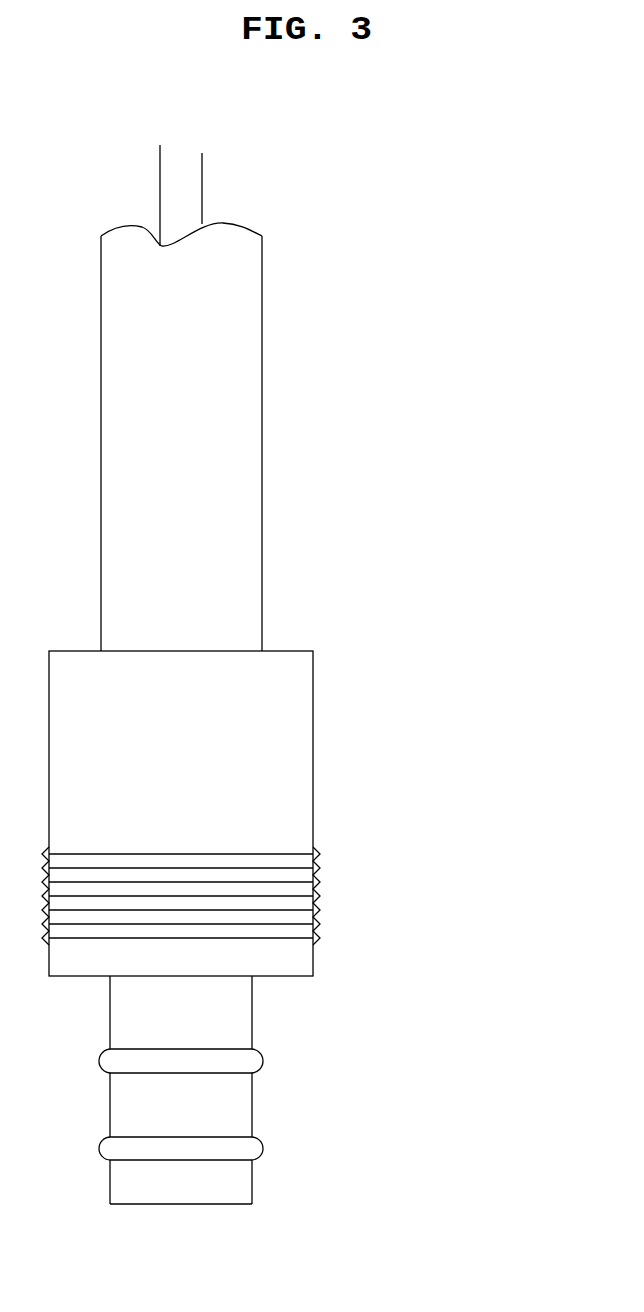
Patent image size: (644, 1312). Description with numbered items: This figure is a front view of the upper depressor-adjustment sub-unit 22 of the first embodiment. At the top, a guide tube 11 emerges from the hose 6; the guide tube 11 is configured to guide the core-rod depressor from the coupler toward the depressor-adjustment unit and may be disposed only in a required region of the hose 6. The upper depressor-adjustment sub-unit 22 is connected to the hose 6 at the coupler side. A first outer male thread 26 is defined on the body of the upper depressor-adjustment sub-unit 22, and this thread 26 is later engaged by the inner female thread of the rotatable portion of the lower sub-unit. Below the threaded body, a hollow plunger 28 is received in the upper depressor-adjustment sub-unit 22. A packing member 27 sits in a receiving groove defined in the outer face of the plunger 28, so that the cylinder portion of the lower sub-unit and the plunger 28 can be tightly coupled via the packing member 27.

The guide tube 11 is at (220, 182).
The hose 6 is at (296, 388).
The upper depressor-adjustment sub-unit 22 is at (375, 731).
The first outer male thread 26 is at (342, 897).
The packing member 27 is at (283, 1054).
The plunger 28 is at (325, 1109).